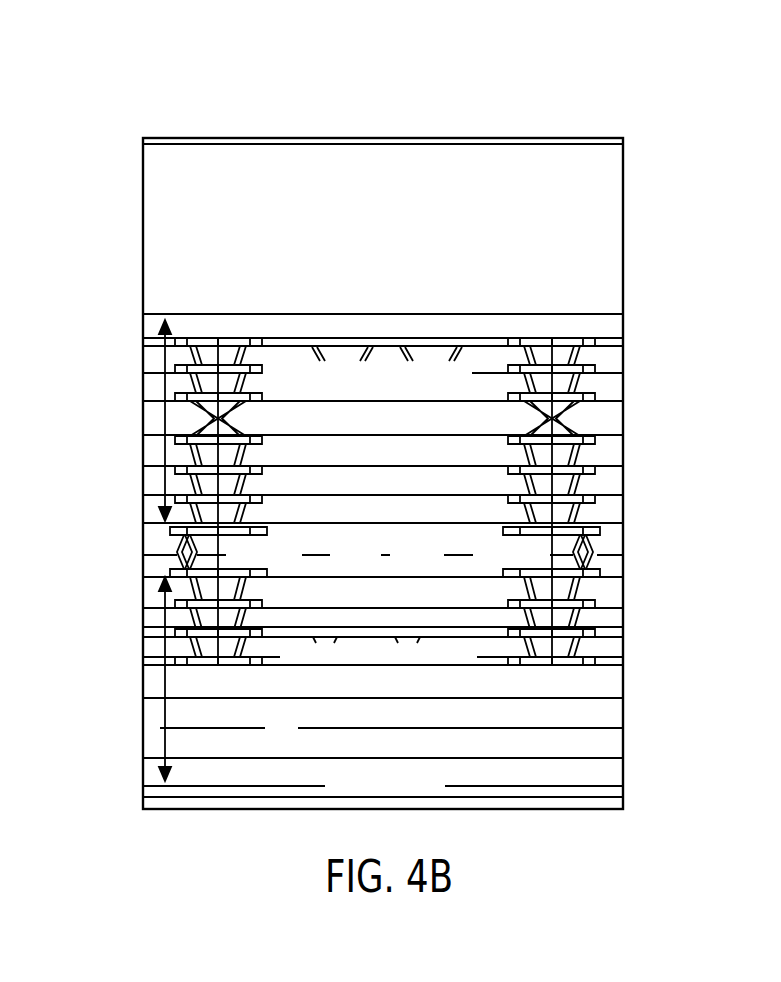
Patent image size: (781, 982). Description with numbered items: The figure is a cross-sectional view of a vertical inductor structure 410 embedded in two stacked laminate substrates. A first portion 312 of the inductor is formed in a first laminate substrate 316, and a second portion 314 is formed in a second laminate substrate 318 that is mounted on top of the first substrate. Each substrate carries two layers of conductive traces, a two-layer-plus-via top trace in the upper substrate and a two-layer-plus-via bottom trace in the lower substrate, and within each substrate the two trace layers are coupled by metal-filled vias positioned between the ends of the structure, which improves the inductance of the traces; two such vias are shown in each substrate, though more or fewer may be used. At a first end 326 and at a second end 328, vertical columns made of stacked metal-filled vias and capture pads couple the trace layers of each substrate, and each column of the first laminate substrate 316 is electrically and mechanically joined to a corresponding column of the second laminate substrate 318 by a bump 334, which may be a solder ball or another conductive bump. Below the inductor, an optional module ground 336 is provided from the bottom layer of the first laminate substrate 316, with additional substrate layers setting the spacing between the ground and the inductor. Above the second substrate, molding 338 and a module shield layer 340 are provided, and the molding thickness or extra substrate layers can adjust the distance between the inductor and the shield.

The vertical inductor structure 410 is at (536, 114).
The module shield layer 340 is at (265, 138).
The molding 338 is at (155, 219).
The second laminate substrate 318 is at (153, 332).
The second portion 314 is at (645, 396).
The bump 334 is at (182, 553).
The first laminate substrate 316 is at (383, 728).
The first end 326 is at (102, 759).
The first portion 312 is at (676, 747).
The second end 328 is at (648, 793).
The module ground 336 is at (548, 798).